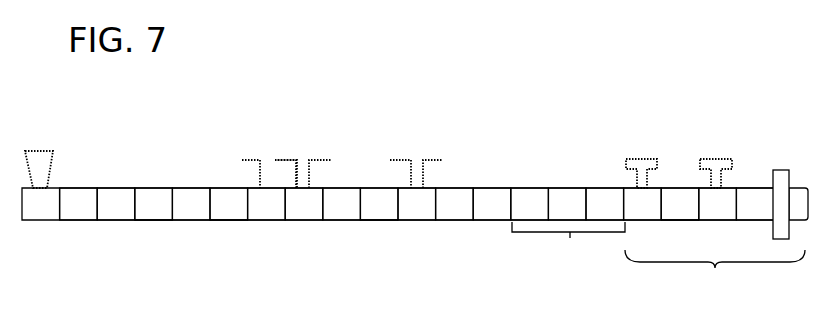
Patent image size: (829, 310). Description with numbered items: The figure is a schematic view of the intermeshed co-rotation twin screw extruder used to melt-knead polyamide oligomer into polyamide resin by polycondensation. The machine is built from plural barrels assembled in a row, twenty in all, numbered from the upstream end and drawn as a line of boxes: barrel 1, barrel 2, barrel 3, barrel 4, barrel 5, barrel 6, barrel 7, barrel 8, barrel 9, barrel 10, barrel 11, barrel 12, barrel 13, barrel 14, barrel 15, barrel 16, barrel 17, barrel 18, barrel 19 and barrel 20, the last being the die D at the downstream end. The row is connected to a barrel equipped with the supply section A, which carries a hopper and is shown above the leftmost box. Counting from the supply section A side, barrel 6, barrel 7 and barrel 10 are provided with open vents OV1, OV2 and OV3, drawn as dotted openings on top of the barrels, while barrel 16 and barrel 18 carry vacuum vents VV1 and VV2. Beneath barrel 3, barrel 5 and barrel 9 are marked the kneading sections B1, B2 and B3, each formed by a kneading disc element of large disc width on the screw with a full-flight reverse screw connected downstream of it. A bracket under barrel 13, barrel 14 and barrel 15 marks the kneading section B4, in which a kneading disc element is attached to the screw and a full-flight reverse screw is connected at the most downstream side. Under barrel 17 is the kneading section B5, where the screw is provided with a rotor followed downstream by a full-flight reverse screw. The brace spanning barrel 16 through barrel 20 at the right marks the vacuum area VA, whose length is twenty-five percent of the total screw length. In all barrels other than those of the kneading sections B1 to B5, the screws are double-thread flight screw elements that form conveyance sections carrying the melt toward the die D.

The supply section A is at (34, 150).
The die D is at (783, 170).
The open vent OV1 is at (269, 160).
The open vent OV2 is at (306, 160).
The open vent OV3 is at (417, 160).
The vacuum vent VV1 is at (641, 159).
The vacuum vent VV2 is at (714, 159).
The kneading section B1 is at (154, 231).
The kneading section B2 is at (229, 231).
The kneading section B3 is at (379, 231).
The kneading section B4 is at (568, 241).
The kneading section B5 is at (680, 231).
The vacuum area VA is at (715, 273).
The barrel 1 is at (79, 204).
The barrel 2 is at (116, 204).
The barrel 3 is at (154, 204).
The barrel 4 is at (191, 204).
The barrel 5 is at (229, 204).
The barrel 6 is at (267, 204).
The barrel 7 is at (304, 204).
The barrel 8 is at (342, 204).
The barrel 9 is at (379, 204).
The barrel 10 is at (417, 204).
The barrel 11 is at (455, 204).
The barrel 12 is at (492, 204).
The barrel 13 is at (530, 204).
The barrel 14 is at (567, 204).
The barrel 15 is at (605, 204).
The barrel 16 is at (643, 204).
The barrel 17 is at (680, 204).
The barrel 18 is at (718, 204).
The barrel 19 is at (755, 204).
The barrel 20 is at (797, 204).